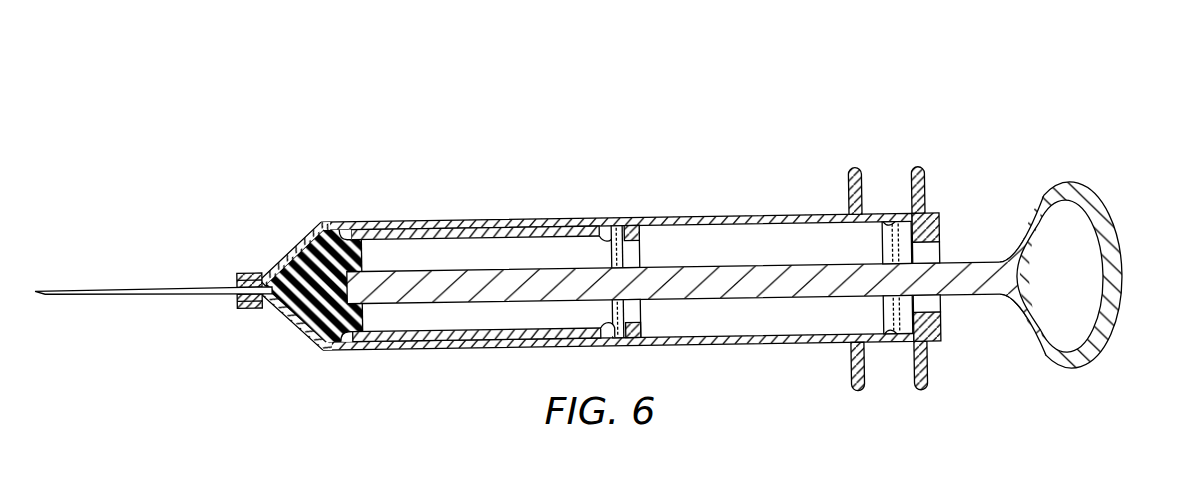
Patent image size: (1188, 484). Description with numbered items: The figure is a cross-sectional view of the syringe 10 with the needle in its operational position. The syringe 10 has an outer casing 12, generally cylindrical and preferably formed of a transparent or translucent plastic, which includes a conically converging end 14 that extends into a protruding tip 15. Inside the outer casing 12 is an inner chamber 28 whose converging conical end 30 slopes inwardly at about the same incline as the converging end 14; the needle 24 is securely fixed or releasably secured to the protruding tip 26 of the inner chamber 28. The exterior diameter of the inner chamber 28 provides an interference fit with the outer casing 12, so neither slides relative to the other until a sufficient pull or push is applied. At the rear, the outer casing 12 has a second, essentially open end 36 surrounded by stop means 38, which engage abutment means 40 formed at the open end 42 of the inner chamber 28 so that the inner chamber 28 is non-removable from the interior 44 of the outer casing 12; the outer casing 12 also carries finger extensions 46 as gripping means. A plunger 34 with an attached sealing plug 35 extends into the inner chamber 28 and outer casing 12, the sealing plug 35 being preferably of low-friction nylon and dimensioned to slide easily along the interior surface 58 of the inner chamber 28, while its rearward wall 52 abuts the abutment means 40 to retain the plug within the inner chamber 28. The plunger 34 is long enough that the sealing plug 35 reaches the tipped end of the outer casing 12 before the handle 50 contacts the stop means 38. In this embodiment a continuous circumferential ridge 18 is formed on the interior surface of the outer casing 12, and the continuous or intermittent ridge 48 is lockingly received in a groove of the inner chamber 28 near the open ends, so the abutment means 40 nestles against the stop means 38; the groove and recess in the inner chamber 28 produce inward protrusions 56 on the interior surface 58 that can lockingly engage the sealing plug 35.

The syringe 10 is at (498, 203).
The outer casing 12 is at (636, 218).
The conically converging end 14 is at (295, 248).
The protruding tip 15 is at (239, 270).
The continuous circumferential ridge 18 is at (345, 229).
The needle 24 is at (189, 296).
The protruding tip 26 is at (259, 270).
The inner chamber 28 is at (442, 238).
The converging conical end 30 is at (293, 324).
The plunger 34 is at (756, 286).
The sealing plug 35 is at (364, 318).
The open end 36 is at (942, 252).
The stop means 38 is at (944, 325).
The abutment means 40 is at (641, 327).
The open end 42 is at (641, 263).
The interior 44 is at (772, 246).
The finger extensions 46 is at (920, 168).
The ridge 48 is at (897, 226).
The handle 50 is at (1122, 258).
The rearward wall 52 is at (363, 264).
The inward protrusions 56 is at (613, 238).
The interior surface 58 is at (553, 332).